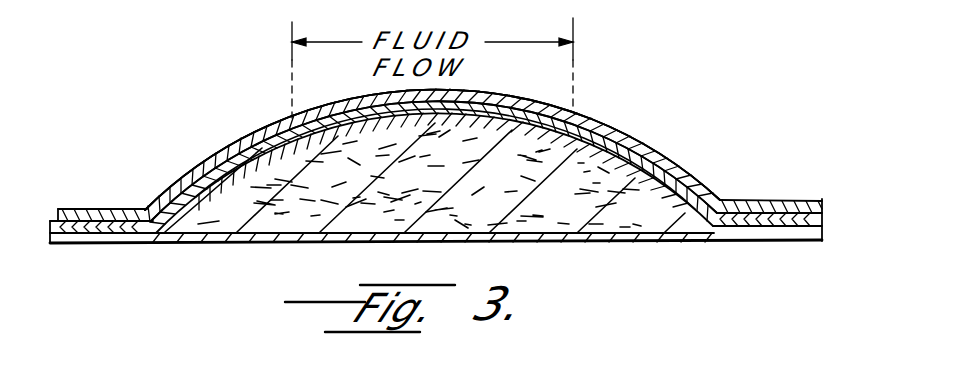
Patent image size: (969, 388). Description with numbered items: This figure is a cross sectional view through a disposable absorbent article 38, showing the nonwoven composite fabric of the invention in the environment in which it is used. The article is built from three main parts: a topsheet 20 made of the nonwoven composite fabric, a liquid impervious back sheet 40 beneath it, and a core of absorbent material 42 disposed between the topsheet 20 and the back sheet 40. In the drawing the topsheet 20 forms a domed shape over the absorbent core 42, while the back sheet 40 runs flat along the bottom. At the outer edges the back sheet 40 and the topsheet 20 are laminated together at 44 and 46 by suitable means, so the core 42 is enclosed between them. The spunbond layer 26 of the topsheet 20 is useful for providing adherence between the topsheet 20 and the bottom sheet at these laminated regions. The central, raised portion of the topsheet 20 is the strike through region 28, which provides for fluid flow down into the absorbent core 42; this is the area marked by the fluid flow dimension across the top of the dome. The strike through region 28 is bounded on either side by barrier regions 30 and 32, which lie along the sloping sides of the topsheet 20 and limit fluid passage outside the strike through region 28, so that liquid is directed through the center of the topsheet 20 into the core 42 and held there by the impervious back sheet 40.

The topsheet 20 is at (689, 170).
The spunbond layer 26 is at (821, 200).
The strike through region 28 is at (547, 95).
The barrier region 30 is at (213, 152).
The barrier region 32 is at (614, 113).
The disposable absorbent article 38 is at (689, 111).
The liquid impervious back sheet 40 is at (754, 242).
The core of absorbent material 42 is at (644, 220).
The lamination point 44 is at (54, 246).
The lamination point 46 is at (798, 232).